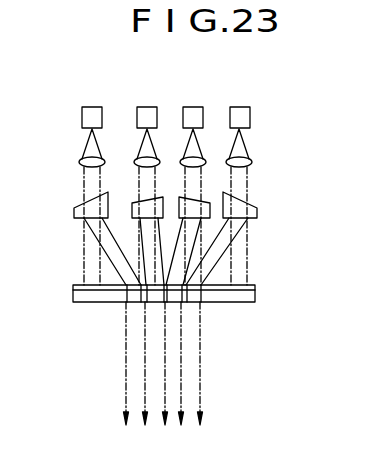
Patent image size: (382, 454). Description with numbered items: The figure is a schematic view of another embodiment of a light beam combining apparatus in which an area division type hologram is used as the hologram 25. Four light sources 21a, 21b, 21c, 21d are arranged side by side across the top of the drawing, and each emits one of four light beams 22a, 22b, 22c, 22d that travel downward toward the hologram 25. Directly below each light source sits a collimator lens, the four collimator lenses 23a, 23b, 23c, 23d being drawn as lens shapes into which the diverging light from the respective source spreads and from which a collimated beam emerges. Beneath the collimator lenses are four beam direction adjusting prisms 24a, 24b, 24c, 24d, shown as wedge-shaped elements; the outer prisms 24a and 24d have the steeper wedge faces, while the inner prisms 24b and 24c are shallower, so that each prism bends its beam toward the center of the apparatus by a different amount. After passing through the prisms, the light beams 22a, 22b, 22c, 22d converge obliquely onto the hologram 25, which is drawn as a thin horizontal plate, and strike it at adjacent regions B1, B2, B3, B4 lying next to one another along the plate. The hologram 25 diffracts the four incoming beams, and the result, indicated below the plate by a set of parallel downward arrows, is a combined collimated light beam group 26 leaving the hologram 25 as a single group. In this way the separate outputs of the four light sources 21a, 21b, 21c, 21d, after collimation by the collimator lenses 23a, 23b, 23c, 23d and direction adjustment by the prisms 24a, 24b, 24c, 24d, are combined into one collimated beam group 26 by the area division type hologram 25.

The light source 21a is at (92, 107).
The light source 21b is at (147, 107).
The light source 21c is at (194, 107).
The light source 21d is at (238, 108).
The collimator lens 23a is at (81, 160).
The collimator lens 23b is at (134, 161).
The collimator lens 23c is at (206, 158).
The collimator lens 23d is at (252, 160).
The beam direction adjusting prism 24a is at (75, 213).
The beam direction adjusting prism 24b is at (133, 202).
The beam direction adjusting prism 24c is at (209, 200).
The beam direction adjusting prism 24d is at (256, 207).
The light beam 22a is at (110, 254).
The light beam 22b is at (138, 229).
The light beam 22c is at (210, 221).
The light beam 22d is at (223, 253).
The hologram 25 is at (255, 290).
The region of the hologram B1 is at (127, 302).
The region of the hologram B2 is at (145, 302).
The region of the hologram B3 is at (174, 302).
The region of the hologram B4 is at (192, 302).
The combined collimated light beam group 26 is at (202, 389).